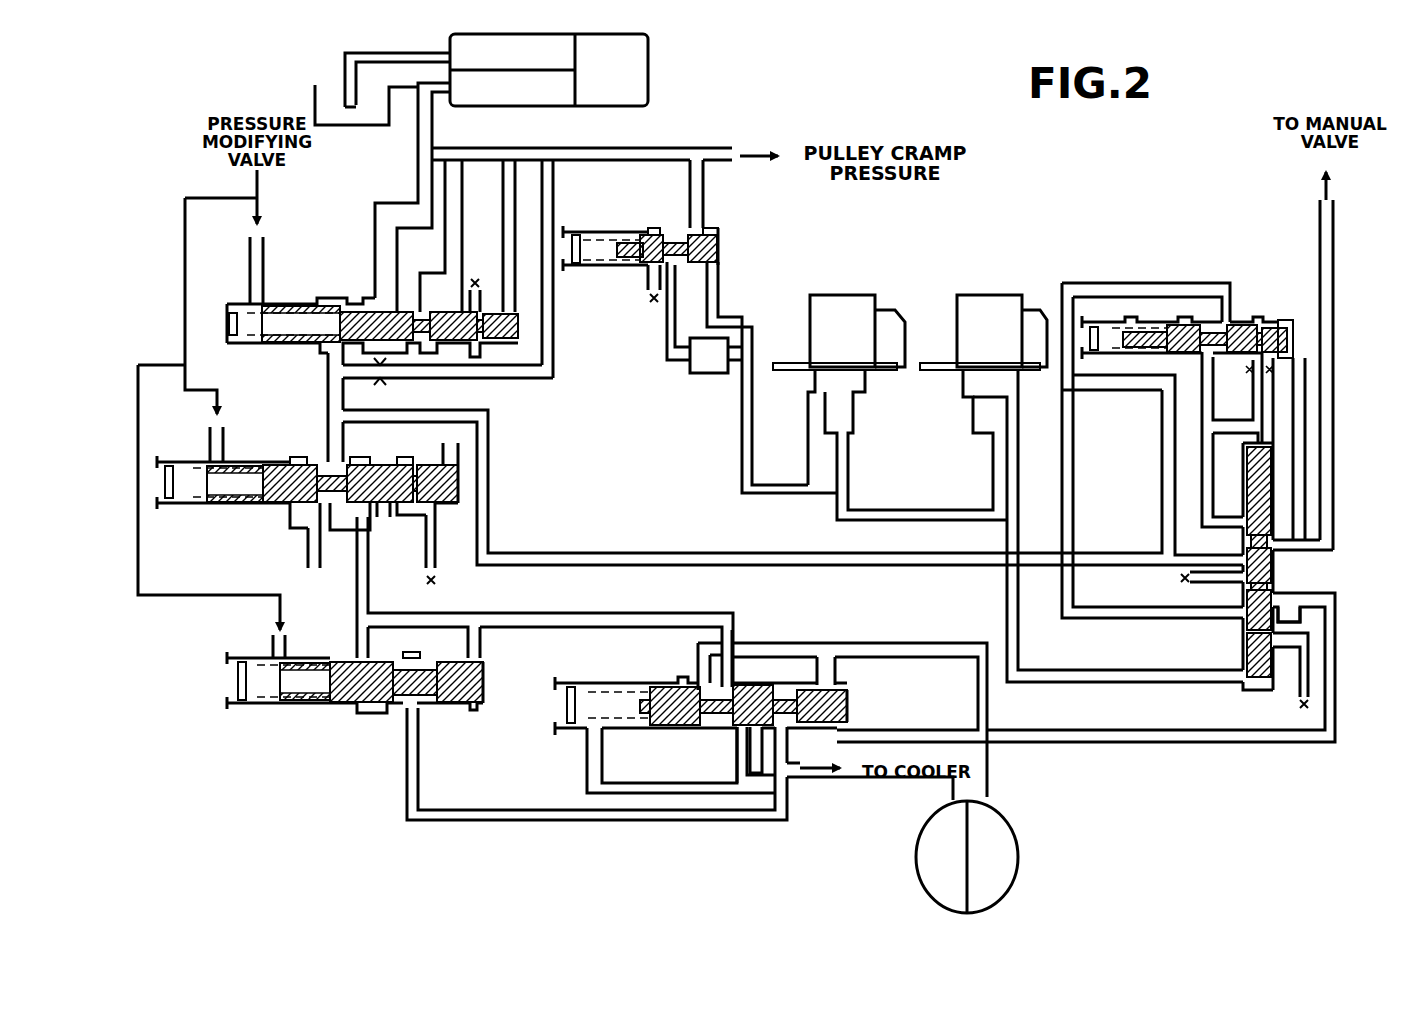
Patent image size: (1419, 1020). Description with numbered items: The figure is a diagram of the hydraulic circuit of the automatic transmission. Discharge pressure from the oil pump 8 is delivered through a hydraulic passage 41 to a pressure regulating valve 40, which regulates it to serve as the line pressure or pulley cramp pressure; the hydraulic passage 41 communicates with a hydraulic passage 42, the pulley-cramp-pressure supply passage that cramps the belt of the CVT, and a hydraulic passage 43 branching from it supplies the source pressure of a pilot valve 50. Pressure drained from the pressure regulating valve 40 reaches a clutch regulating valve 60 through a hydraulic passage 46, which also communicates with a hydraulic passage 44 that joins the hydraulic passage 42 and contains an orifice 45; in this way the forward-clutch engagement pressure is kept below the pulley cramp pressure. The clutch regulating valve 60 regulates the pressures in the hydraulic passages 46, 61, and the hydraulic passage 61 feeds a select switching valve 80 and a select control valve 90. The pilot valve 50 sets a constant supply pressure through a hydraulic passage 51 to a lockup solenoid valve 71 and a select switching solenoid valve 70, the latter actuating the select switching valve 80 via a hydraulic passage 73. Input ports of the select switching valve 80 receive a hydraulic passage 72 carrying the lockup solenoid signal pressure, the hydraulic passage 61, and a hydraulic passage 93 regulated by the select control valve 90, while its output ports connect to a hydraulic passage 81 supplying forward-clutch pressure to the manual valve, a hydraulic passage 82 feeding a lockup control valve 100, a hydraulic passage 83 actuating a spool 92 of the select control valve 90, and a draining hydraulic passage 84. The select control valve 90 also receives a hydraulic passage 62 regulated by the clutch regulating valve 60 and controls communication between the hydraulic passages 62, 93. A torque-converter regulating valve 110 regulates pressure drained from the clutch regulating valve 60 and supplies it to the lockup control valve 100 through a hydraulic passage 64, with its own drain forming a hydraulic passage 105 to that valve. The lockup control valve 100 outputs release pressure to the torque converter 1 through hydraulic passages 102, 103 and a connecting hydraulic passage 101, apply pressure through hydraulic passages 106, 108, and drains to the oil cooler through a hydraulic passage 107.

The torque converter 1 is at (1015, 832).
The oil pump 8 is at (648, 68).
The pressure regulating valve 40 is at (495, 353).
The hydraulic passage 41 is at (432, 128).
The hydraulic passage 42 is at (650, 140).
The hydraulic passage 43 is at (703, 200).
The hydraulic passage 44 is at (553, 328).
The orifice 45 is at (402, 393).
The hydraulic passage 46 is at (327, 402).
The pilot valve 50 is at (732, 252).
The hydraulic passage 51 is at (753, 345).
The clutch regulating valve 60 is at (280, 520).
The hydraulic passage 61 is at (490, 478).
The hydraulic passage 62 is at (1108, 392).
The hydraulic passage 64 is at (550, 614).
The select switching solenoid valve 70 is at (1003, 290).
The lockup solenoid valve 71 is at (857, 290).
The hydraulic passage 72 is at (905, 560).
The hydraulic passage 73 is at (1006, 598).
The select switching valve 80 is at (1235, 636).
The hydraulic passage 81 is at (1334, 368).
The hydraulic passage 82 is at (1338, 592).
The hydraulic passage 83 is at (1310, 620).
The hydraulic passage 84 is at (1310, 680).
The select control valve 90 is at (1300, 332).
The spool 92 is at (1175, 320).
The hydraulic passage 93 is at (1200, 448).
The lockup control valve 100 is at (662, 676).
The passage 101 is at (840, 642).
The hydraulic passage 102 is at (745, 642).
The hydraulic passage 103 is at (838, 670).
The hydraulic passage 105 is at (487, 822).
The hydraulic passage 106 is at (742, 800).
The hydraulic passage 107 is at (800, 790).
The hydraulic passage 108 is at (612, 800).
The torque-converter regulating valve 110 is at (318, 733).